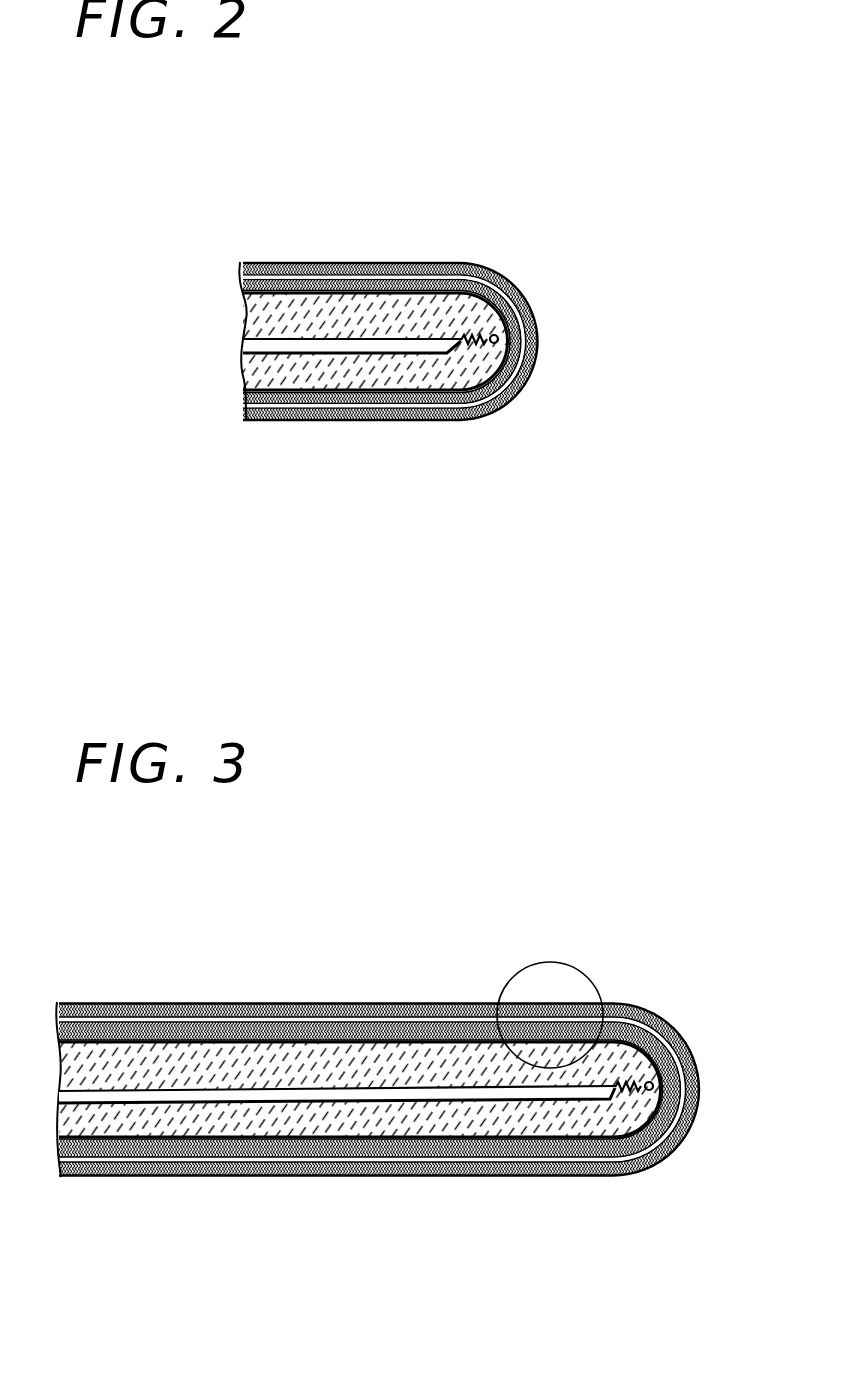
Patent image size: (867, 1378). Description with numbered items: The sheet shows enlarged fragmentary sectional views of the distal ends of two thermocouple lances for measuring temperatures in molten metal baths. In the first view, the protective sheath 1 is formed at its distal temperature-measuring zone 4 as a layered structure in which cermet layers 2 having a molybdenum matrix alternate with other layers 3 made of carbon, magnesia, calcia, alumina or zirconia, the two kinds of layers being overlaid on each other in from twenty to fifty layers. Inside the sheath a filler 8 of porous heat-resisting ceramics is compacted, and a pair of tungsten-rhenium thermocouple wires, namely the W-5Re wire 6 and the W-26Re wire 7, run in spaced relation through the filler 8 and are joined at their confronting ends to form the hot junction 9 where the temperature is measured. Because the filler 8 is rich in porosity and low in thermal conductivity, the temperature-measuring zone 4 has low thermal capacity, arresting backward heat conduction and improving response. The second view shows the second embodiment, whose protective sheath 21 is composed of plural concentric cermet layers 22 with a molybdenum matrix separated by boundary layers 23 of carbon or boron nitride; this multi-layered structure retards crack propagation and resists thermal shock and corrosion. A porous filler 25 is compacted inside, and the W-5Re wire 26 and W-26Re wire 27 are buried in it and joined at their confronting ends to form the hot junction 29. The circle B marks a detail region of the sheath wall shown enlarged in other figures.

In FIG. 2, the protective sheath 1 is at (462, 258).
In FIG. 2, the cermet layers 2 is at (352, 412).
In FIG. 2, the other layers 3 is at (395, 410).
In FIG. 2, the temperature-measuring zone 4 is at (512, 275).
In FIG. 2, the W-5Re thermocouple wire 6 is at (270, 343).
In FIG. 2, the W-26Re thermocouple wire 7 is at (270, 372).
In FIG. 2, the filler 8 is at (318, 322).
In FIG. 2, the hot junction 9 is at (538, 332).
In FIG. 3, the protective sheath 21 is at (320, 1003).
In FIG. 3, the cermet layers 22 is at (458, 1012).
In FIG. 3, the boundary layers 23 is at (212, 1036).
In FIG. 3, the filler 25 is at (473, 1110).
In FIG. 3, the W-5Re thermocouple wire 26 is at (258, 1093).
In FIG. 3, the W-26Re thermocouple wire 27 is at (327, 1102).
In FIG. 3, the hot junction 29 is at (700, 1085).
In FIG. 3, the enlarged region B is at (578, 967).